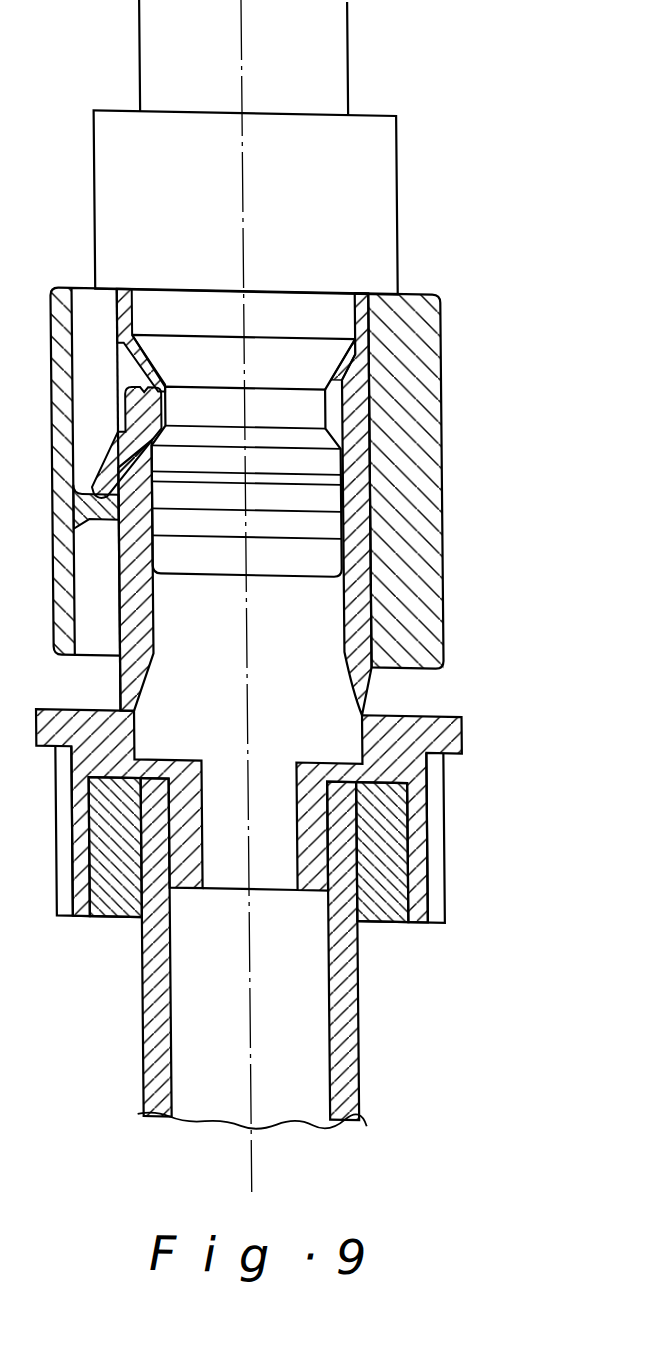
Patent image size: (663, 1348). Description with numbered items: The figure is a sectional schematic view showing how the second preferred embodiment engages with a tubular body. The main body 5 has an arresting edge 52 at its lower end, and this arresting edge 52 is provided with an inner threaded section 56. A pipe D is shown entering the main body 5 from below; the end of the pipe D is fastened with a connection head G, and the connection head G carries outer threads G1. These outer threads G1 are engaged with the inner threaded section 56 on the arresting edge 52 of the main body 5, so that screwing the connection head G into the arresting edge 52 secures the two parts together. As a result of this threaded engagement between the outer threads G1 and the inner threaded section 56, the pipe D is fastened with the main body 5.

The main body 5 is at (362, 611).
The arresting edge 52 is at (450, 733).
The inner threaded section 56 is at (412, 849).
The outer threads G1 is at (403, 920).
The connection head G is at (370, 921).
The pipe D is at (337, 1083).